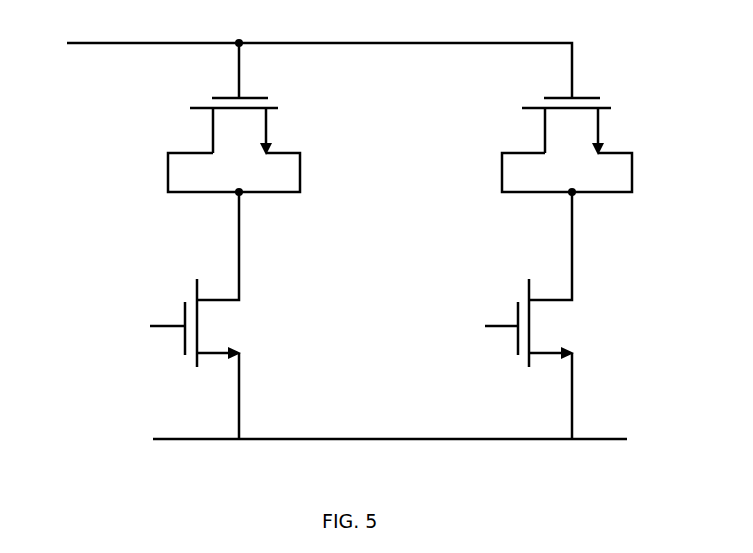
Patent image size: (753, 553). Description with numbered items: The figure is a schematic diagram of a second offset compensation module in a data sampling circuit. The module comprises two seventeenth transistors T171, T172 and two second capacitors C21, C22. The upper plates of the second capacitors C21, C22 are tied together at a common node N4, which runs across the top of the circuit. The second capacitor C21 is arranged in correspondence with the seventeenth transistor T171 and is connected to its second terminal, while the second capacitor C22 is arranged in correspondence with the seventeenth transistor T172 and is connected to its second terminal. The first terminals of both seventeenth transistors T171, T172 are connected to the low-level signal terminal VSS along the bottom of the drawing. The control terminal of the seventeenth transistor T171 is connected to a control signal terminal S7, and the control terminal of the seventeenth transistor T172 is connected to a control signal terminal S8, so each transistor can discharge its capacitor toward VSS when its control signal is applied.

The node N4 is at (301, 66).
The second capacitor C21 is at (200, 147).
The second capacitor C22 is at (589, 147).
The seventeenth transistor T171 is at (240, 315).
The seventeenth transistor T172 is at (571, 315).
The control signal terminal S7 is at (153, 326).
The control signal terminal S8 is at (481, 326).
The low-level signal terminal VSS is at (363, 440).